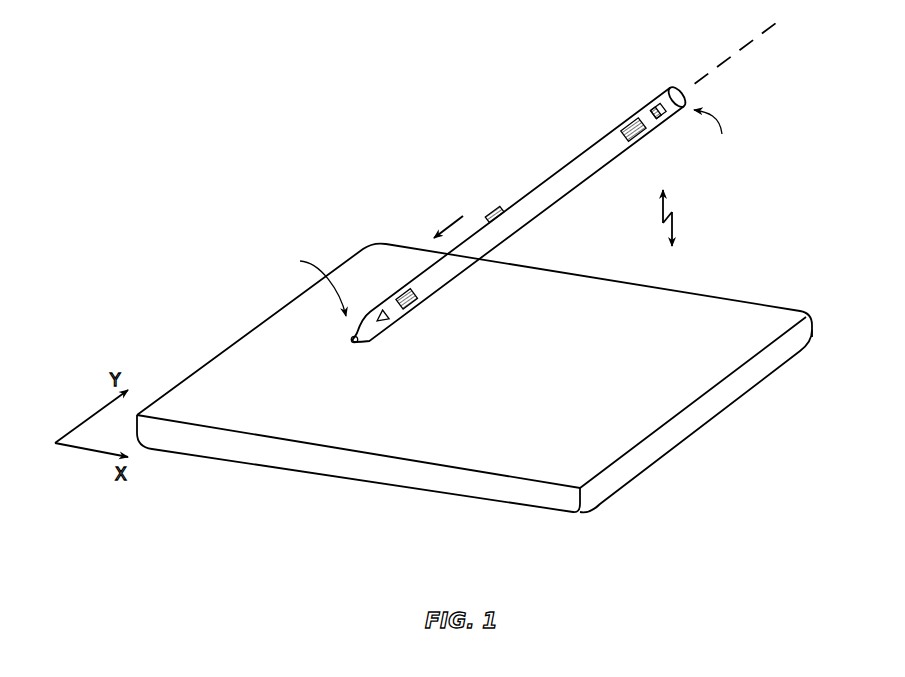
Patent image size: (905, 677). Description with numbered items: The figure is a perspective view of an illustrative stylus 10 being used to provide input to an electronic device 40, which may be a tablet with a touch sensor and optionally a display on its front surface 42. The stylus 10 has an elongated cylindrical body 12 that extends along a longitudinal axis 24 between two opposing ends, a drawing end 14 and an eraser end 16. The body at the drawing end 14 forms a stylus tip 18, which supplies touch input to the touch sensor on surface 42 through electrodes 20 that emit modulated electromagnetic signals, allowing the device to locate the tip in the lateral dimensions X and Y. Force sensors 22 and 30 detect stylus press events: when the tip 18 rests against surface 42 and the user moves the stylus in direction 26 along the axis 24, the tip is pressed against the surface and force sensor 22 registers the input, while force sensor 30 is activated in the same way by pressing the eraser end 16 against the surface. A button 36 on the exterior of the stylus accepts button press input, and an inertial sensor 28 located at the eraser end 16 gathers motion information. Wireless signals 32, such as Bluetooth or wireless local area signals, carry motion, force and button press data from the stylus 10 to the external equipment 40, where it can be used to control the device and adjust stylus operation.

The stylus 10 is at (525, 233).
The body 12 is at (572, 193).
The end 14 is at (311, 283).
The end 16 is at (720, 131).
The stylus tip 18 is at (358, 344).
The electrodes 20 is at (388, 322).
The force sensor 22 is at (416, 303).
The longitudinal axis 24 is at (735, 58).
The direction 26 is at (446, 226).
The inertial sensor 28 is at (626, 124).
The force sensor 30 is at (657, 116).
The wireless signals 32 is at (676, 220).
The button 36 is at (489, 211).
The device 40 is at (474, 378).
The surface 42 is at (697, 370).